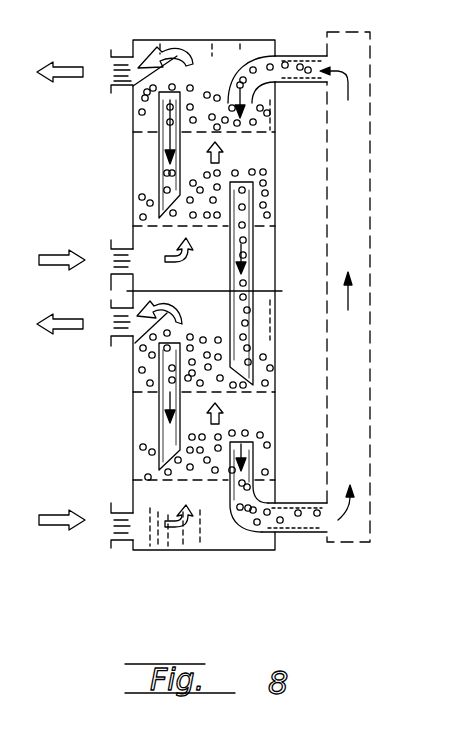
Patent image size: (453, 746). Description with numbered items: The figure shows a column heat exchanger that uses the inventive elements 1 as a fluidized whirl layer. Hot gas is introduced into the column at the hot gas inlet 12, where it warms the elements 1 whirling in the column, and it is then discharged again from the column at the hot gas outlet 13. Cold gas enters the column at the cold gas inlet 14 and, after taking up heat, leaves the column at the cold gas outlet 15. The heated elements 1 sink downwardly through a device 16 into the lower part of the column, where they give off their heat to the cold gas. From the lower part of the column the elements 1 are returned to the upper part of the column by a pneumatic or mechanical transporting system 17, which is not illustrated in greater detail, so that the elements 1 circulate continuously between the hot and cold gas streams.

The elements 1 is at (240, 168).
The hot gas inlet 12 is at (54, 260).
The hot gas outlet 13 is at (68, 72).
The cold gas inlet 14 is at (56, 520).
The cold gas outlet 15 is at (68, 322).
The device 16 is at (243, 247).
The transporting system 17 is at (352, 343).